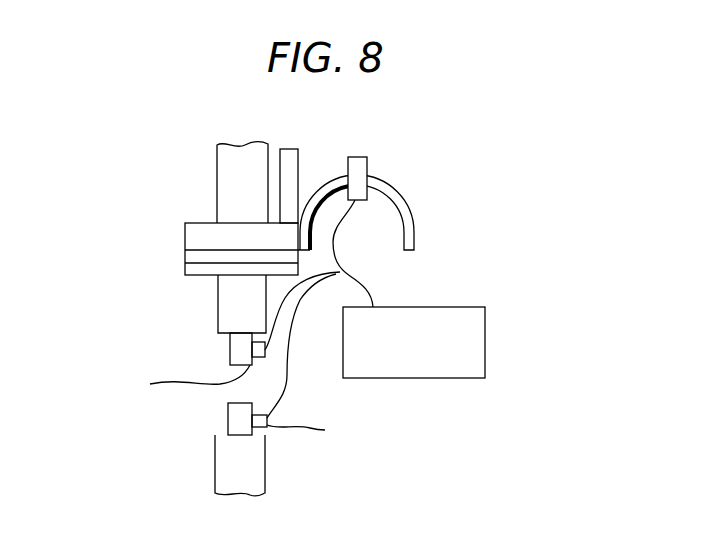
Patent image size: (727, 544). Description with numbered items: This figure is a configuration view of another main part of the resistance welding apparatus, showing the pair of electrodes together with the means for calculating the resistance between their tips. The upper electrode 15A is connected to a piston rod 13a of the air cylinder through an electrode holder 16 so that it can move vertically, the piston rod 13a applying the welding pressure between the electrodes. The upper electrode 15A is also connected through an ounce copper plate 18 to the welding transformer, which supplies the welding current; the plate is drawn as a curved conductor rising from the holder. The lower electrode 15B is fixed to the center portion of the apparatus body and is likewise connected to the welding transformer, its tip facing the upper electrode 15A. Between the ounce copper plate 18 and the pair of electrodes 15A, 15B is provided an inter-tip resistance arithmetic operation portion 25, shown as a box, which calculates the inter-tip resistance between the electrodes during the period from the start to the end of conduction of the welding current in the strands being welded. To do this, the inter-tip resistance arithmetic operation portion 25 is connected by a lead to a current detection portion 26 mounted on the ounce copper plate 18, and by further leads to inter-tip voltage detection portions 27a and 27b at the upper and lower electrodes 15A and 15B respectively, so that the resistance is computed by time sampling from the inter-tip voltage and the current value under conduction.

The piston rod 13a is at (225, 180).
The electrode holder 16 is at (217, 300).
The ounce copper plate 18 is at (405, 199).
The current detection portion 26 is at (368, 159).
The inter-tip resistance arithmetic operation portion 25 is at (486, 342).
The upper electrode 15A is at (230, 351).
The lower electrode 15B is at (228, 418).
The inter-tip voltage detection portion 27a is at (175, 382).
The inter-tip voltage detection portion 27b is at (318, 432).